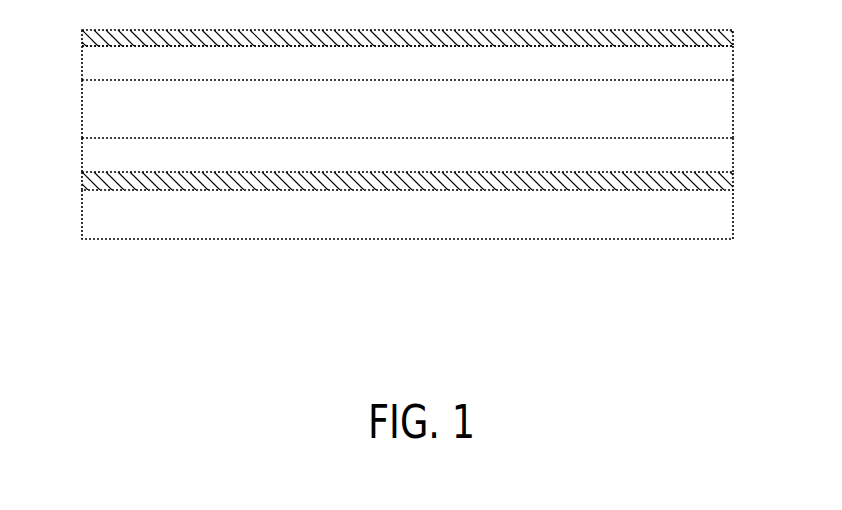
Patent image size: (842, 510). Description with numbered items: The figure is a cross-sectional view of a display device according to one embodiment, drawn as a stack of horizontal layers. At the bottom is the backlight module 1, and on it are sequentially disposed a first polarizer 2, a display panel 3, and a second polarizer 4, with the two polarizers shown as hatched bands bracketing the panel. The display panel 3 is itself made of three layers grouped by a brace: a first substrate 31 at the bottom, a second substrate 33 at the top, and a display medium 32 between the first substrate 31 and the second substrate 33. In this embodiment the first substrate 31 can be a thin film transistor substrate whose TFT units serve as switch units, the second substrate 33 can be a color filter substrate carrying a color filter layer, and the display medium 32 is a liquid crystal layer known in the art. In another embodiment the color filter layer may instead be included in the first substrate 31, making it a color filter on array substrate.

The backlight module 1 is at (736, 212).
The first polarizer 2 is at (736, 181).
The display panel 3 is at (456, 109).
The first substrate 31 is at (736, 150).
The display medium 32 is at (736, 108).
The second substrate 33 is at (439, 65).
The second polarizer 4 is at (736, 38).